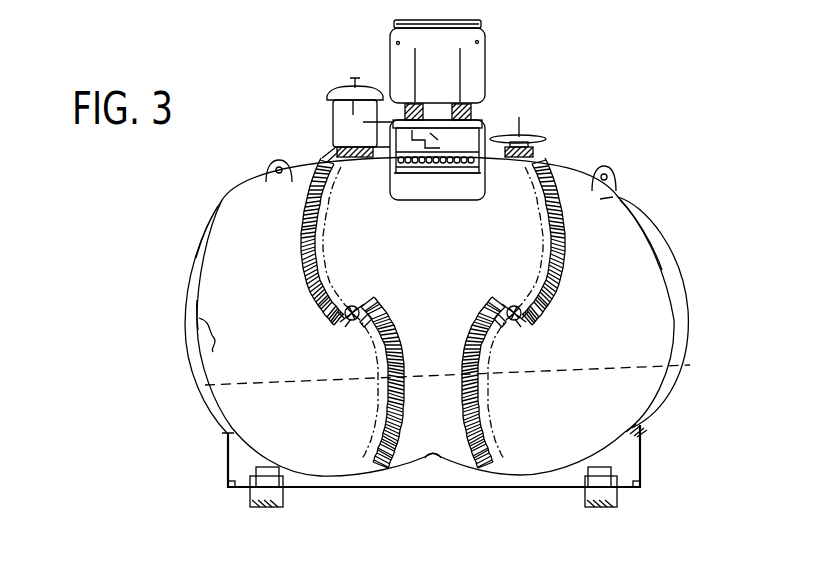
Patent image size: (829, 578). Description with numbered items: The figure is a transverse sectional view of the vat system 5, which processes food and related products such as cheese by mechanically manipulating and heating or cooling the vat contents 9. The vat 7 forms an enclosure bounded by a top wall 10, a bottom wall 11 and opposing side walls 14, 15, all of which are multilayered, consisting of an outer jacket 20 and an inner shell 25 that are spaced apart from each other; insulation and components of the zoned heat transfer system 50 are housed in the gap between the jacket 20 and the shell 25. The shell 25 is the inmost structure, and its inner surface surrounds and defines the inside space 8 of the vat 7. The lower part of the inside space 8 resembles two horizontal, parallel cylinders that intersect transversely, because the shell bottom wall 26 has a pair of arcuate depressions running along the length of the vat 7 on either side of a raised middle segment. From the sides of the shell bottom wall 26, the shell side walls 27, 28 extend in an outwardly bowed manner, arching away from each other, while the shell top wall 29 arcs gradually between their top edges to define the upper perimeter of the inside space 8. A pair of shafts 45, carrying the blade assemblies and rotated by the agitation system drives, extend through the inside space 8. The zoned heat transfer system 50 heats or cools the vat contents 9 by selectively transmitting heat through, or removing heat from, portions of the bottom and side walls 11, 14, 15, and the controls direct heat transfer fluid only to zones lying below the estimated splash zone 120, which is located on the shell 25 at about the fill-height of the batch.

The vat system 5 is at (543, 42).
The vat 7 is at (291, 170).
The inside space 8 is at (622, 197).
The vat contents 9 is at (337, 393).
The top wall 10 is at (566, 167).
The bottom wall 11 is at (540, 490).
The side wall 14 is at (688, 287).
The side wall 15 is at (192, 372).
The outer jacket 20 is at (188, 239).
The inner shell 25 is at (197, 305).
The shell bottom wall 26 is at (412, 460).
The shell side wall 27 is at (668, 277).
The shell side wall 28 is at (205, 262).
The shell top wall 29 is at (373, 165).
The shaft 45 is at (362, 306).
The zoned heat transfer system 50 is at (640, 430).
The splash zone 120 is at (208, 340).